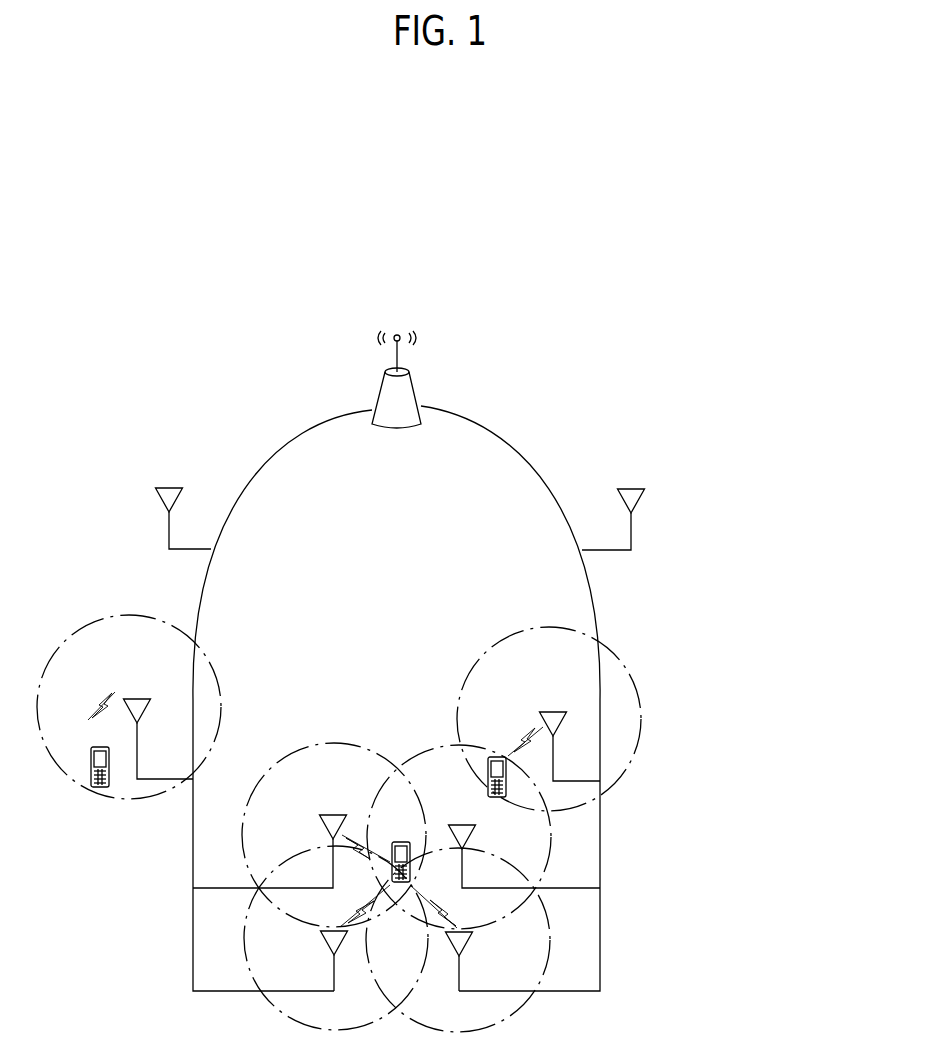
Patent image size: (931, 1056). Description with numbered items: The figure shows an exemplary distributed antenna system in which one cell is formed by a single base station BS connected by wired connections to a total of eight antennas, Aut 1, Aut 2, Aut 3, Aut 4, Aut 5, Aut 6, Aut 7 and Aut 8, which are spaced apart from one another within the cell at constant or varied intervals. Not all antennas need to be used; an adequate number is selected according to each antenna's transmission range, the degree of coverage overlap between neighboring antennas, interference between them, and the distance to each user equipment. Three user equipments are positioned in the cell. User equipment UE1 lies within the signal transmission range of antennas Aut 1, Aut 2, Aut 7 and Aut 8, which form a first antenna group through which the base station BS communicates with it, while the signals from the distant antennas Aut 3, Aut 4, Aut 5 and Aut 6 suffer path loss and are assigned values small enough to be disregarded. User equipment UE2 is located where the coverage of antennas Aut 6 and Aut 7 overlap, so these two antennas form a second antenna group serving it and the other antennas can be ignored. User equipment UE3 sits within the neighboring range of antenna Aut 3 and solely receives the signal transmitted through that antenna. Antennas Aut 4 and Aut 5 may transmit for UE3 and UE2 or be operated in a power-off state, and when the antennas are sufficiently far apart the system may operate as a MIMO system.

The base station BS is at (396, 661).
The antenna 1 Aut 1 is at (336, 938).
The antenna 2 Aut 2 is at (309, 835).
The antenna 3 Aut 3 is at (129, 707).
The antenna 4 Aut 4 is at (164, 518).
The antenna 5 Aut 5 is at (633, 519).
The antenna 6 Aut 6 is at (549, 719).
The antenna 7 Aut 7 is at (483, 837).
The antenna 8 Aut 8 is at (458, 940).
The user equipment 1 UE1 is at (398, 881).
The user equipment 2 UE2 is at (518, 767).
The user equipment 3 UE3 is at (98, 754).